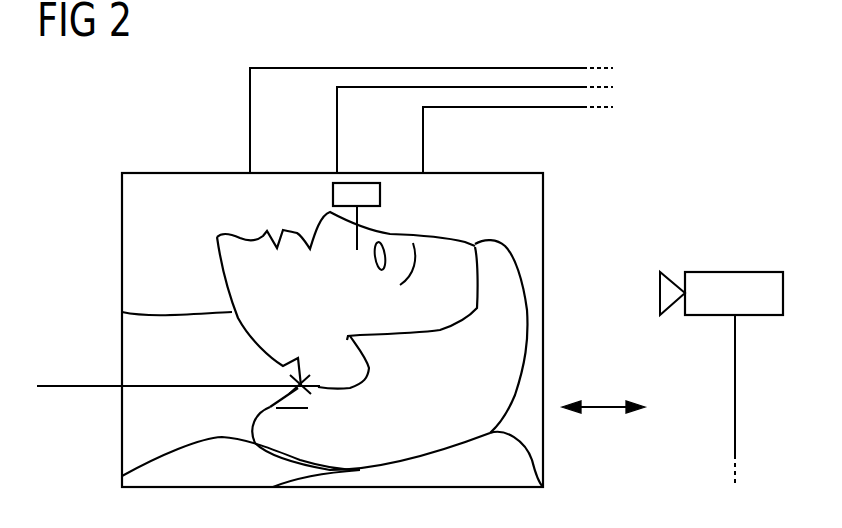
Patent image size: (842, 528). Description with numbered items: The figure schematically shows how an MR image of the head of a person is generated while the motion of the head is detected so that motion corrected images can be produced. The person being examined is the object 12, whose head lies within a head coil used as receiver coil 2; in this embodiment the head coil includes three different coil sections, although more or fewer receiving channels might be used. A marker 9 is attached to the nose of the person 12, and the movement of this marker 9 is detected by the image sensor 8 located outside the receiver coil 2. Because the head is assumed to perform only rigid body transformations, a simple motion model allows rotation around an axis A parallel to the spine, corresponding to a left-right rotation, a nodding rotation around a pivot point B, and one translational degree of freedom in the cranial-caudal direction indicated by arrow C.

The receiver coil 2 is at (543, 247).
The image sensor 8 is at (735, 272).
The marker 9 is at (380, 195).
The object 12 is at (543, 322).
The axis A is at (82, 385).
The pivot point B is at (306, 392).
The arrow C is at (605, 409).